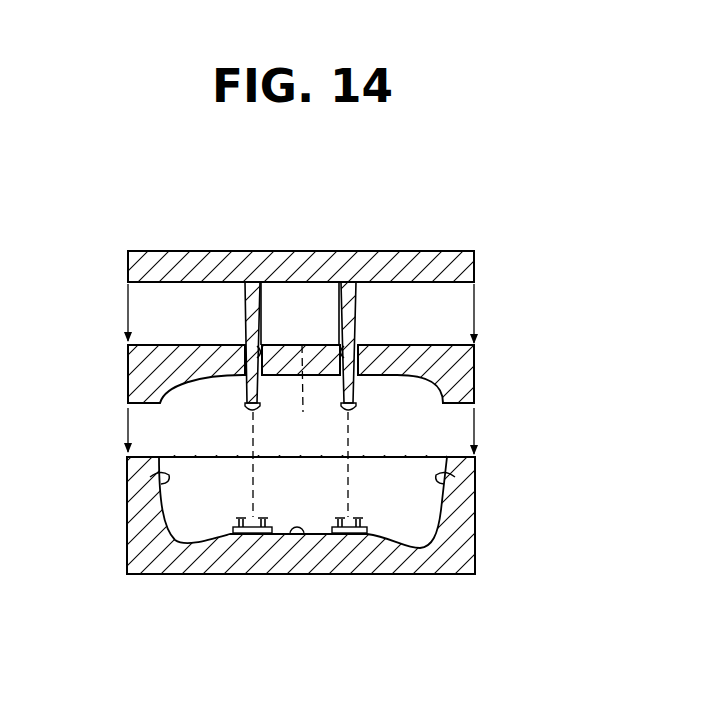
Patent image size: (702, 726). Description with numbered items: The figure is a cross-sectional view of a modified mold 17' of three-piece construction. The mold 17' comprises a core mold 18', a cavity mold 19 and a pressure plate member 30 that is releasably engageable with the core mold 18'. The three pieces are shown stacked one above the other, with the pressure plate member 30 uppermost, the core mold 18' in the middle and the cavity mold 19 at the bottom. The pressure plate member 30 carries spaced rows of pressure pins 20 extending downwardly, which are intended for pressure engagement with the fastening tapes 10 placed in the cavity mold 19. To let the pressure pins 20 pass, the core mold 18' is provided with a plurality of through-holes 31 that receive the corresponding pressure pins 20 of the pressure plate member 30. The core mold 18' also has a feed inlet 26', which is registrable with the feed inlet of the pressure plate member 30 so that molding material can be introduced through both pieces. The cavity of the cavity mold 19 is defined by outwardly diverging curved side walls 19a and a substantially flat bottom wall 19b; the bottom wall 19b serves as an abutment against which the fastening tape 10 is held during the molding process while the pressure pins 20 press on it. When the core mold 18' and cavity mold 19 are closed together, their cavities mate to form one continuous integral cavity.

The fastening tape 10 is at (351, 540).
The mold 17' is at (340, 315).
The core mold 18' is at (351, 363).
The cavity mold 19 is at (467, 521).
The curved side walls 19a is at (150, 477).
The bottom wall 19b is at (305, 534).
The pressure pins 20 is at (358, 305).
The feed inlet 26' is at (351, 363).
The pressure plate member 30 is at (444, 251).
The through-holes 31 is at (257, 345).